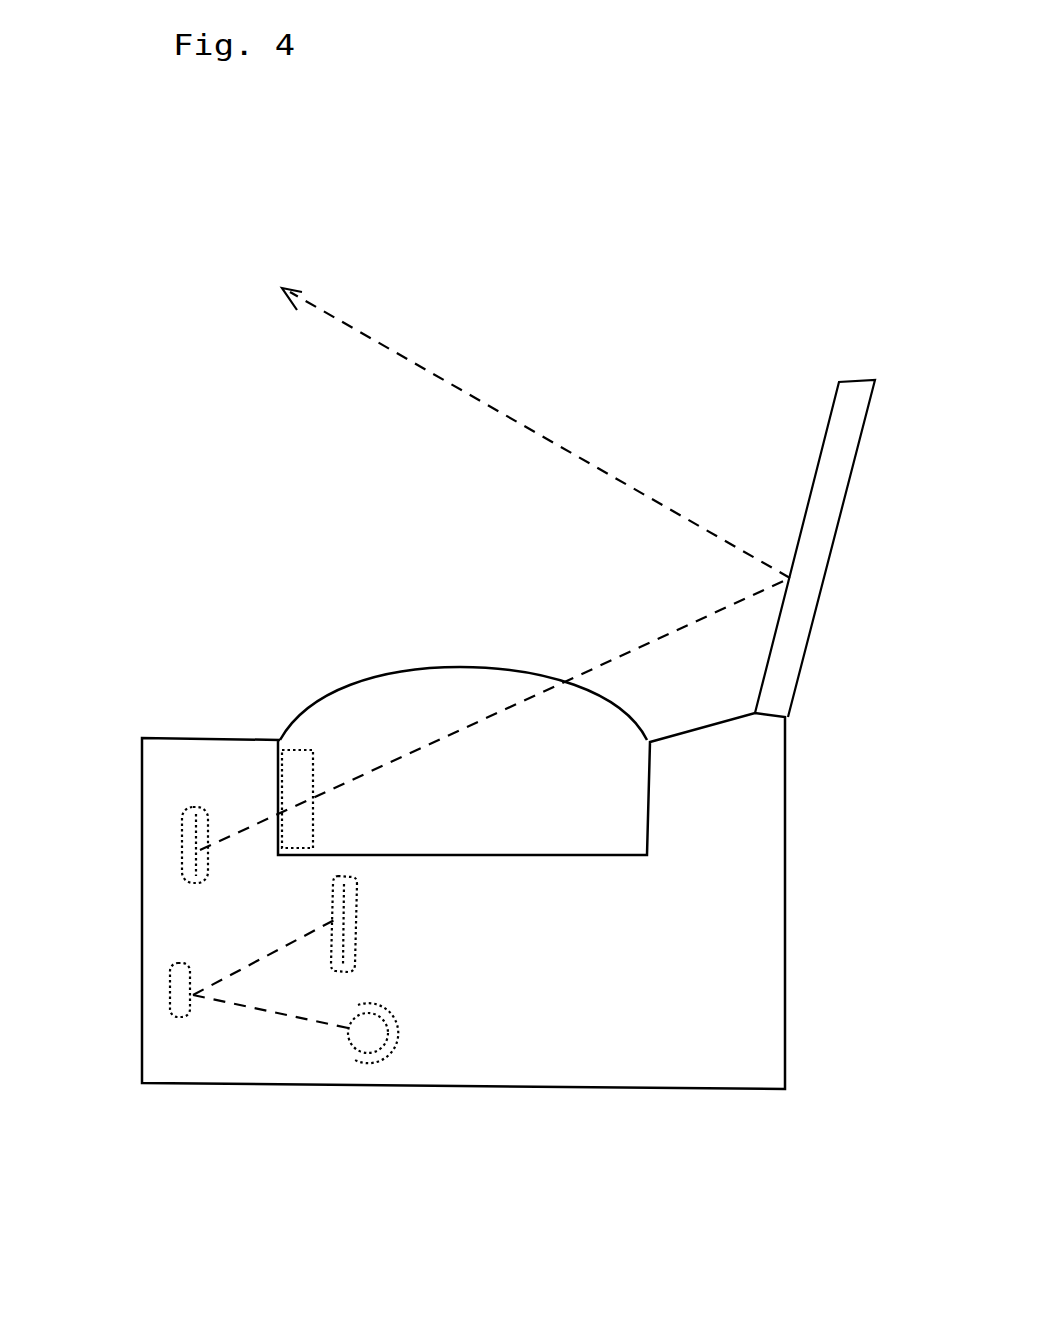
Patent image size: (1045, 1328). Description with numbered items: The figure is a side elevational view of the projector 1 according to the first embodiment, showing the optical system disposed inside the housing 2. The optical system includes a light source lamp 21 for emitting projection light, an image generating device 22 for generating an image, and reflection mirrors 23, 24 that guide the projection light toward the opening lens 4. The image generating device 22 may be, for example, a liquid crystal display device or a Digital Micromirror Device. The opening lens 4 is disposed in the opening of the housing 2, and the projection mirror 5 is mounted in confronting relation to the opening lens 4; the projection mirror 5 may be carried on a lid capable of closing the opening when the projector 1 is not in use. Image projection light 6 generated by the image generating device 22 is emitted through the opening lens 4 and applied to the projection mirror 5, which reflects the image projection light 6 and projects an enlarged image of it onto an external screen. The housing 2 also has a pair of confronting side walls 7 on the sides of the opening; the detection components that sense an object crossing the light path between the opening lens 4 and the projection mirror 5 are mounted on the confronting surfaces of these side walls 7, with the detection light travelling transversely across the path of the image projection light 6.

The projector 1 is at (479, 746).
The housing 2 is at (773, 887).
The opening lens 4 is at (315, 770).
The projection mirror 5 is at (806, 609).
The image projection light 6 is at (573, 452).
The side walls 7 is at (437, 680).
The light source lamp 21 is at (393, 1050).
The image generating device 22 is at (182, 1017).
The reflection mirror 23 is at (350, 913).
The reflection mirror 24 is at (173, 852).